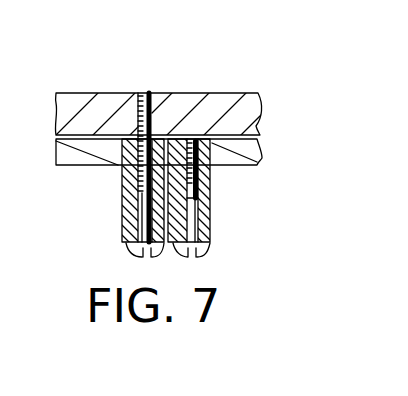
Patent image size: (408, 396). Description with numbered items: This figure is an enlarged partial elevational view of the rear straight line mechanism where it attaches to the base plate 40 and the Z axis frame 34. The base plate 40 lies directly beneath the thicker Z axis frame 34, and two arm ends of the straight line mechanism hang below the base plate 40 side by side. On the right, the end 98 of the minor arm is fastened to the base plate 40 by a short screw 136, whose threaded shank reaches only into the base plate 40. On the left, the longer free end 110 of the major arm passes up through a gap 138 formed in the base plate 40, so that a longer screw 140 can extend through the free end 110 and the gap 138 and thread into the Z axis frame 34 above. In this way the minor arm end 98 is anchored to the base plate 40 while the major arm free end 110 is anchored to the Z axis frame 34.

The Z axis frame 34 is at (262, 107).
The base plate 40 is at (258, 148).
The free end of the major arm 110 is at (121, 205).
The gap 138 is at (118, 163).
The longer screw 140 is at (130, 247).
The end of the minor arm 98 is at (211, 203).
The short screw 136 is at (203, 248).